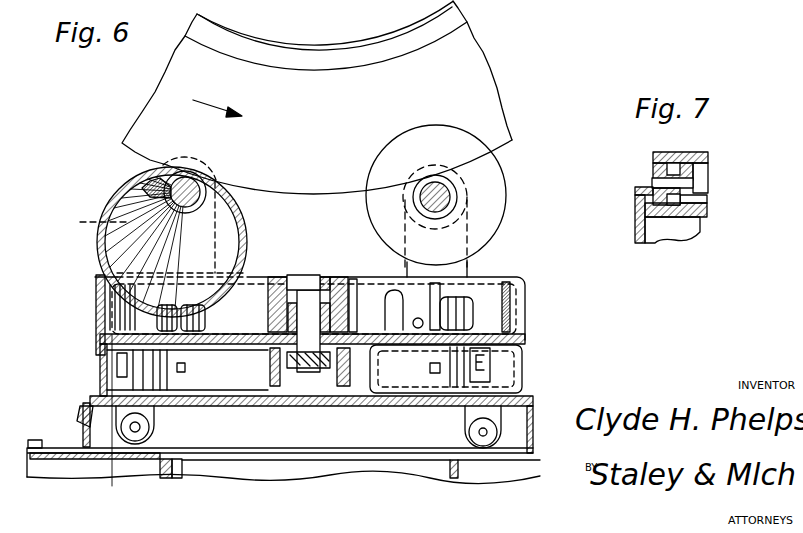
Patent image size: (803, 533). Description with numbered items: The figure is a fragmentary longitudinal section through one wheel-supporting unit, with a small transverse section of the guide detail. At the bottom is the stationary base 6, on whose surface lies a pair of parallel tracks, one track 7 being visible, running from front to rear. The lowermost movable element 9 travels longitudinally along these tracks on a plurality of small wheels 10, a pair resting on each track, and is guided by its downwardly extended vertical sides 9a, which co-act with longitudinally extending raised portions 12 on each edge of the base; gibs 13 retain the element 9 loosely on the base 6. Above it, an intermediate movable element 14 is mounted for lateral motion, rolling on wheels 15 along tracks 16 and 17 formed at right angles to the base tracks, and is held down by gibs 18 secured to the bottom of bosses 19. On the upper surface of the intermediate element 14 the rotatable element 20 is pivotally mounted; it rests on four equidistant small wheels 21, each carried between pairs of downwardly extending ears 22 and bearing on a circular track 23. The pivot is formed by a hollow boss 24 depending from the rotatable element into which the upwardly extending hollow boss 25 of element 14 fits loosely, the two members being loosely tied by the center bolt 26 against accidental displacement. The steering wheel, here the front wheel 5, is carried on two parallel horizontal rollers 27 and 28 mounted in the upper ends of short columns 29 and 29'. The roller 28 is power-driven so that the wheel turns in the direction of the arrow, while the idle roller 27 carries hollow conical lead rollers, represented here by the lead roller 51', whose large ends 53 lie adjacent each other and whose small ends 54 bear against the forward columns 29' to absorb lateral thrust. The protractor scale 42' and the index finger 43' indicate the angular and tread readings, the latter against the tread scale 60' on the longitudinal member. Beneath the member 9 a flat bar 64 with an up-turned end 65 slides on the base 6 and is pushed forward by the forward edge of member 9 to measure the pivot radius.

In FIG. 6, the front wheel 5 is at (460, 58).
In FIG. 6, the stationary base 6 is at (280, 462).
In FIG. 7, the stationary base 6 is at (657, 235).
In FIG. 6, the track 7 is at (124, 378).
In FIG. 7, the track 7 is at (693, 235).
In FIG. 6, the lowermost movable element 9 is at (530, 403).
In FIG. 7, the lowermost movable element 9 is at (707, 158).
In FIG. 6, the downwardly extended vertical sides 9a is at (320, 437).
In FIG. 7, the downwardly extended vertical sides 9a is at (665, 205).
In FIG. 6, the small wheels 10 is at (158, 433).
In FIG. 7, the small wheels 10 is at (707, 203).
In FIG. 6, the raised portions 12 is at (33, 445).
In FIG. 7, the raised portions 12 is at (635, 205).
In FIG. 6, the gibs 13 is at (63, 437).
In FIG. 7, the gibs 13 is at (635, 190).
In FIG. 6, the intermediate movable element 14 is at (507, 363).
In FIG. 6, the wheels 15 is at (182, 358).
In FIG. 6, the track 16 is at (152, 409).
In FIG. 6, the track 17 is at (457, 410).
In FIG. 7, the track 17 is at (690, 152).
In FIG. 6, the gibs 18 is at (204, 404).
In FIG. 6, the bosses 19 is at (403, 377).
In FIG. 6, the rotatable element 20 is at (515, 282).
In FIG. 6, the small wheels 21 is at (210, 2).
In FIG. 6, the downwardly extending ears 22 is at (163, 317).
In FIG. 6, the circular track 23 is at (487, 342).
In FIG. 6, the hollow boss 24 is at (272, 310).
In FIG. 6, the hollow boss 25 is at (327, 317).
In FIG. 6, the center bolt 26 is at (310, 298).
In FIG. 6, the roller 27 is at (208, 186).
In FIG. 6, the roller 28 is at (458, 197).
In FIG. 6, the column 29 is at (452, 201).
In FIG. 6, the column 29' is at (143, 242).
In FIG. 6, the bracket 42' is at (73, 286).
In FIG. 6, the left index finger 43' is at (67, 346).
In FIG. 6, the spoke 51' is at (269, 242).
In FIG. 6, the large ends 53 is at (318, 268).
In FIG. 6, the small ends 54 is at (207, 195).
In FIG. 6, the scale 60' is at (61, 393).
In FIG. 6, the flat bar 64 is at (174, 479).
In FIG. 6, the up-turned end 65 is at (33, 459).